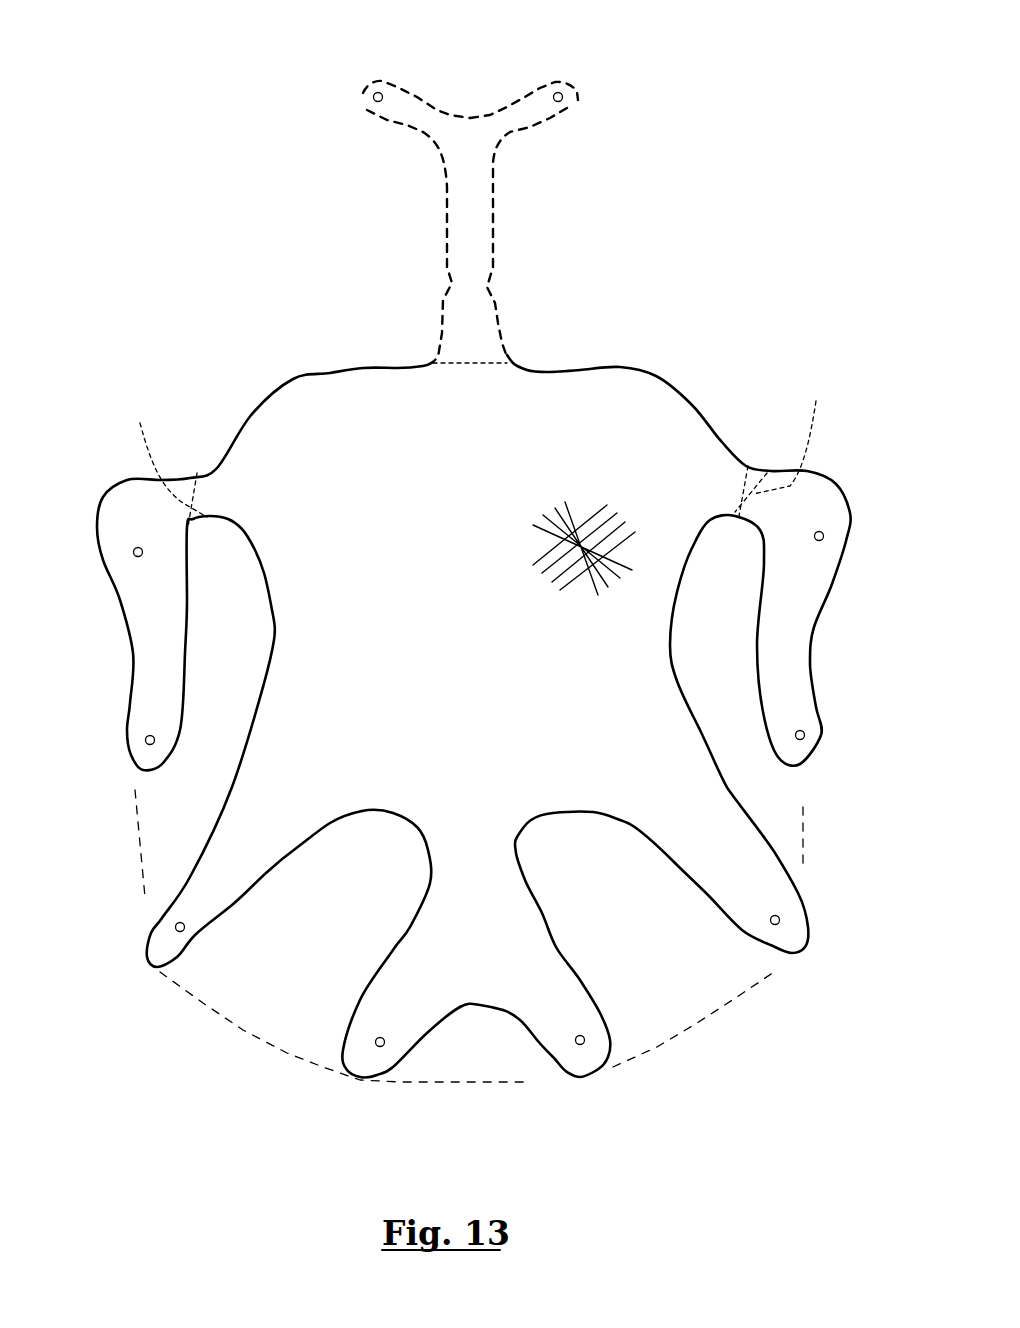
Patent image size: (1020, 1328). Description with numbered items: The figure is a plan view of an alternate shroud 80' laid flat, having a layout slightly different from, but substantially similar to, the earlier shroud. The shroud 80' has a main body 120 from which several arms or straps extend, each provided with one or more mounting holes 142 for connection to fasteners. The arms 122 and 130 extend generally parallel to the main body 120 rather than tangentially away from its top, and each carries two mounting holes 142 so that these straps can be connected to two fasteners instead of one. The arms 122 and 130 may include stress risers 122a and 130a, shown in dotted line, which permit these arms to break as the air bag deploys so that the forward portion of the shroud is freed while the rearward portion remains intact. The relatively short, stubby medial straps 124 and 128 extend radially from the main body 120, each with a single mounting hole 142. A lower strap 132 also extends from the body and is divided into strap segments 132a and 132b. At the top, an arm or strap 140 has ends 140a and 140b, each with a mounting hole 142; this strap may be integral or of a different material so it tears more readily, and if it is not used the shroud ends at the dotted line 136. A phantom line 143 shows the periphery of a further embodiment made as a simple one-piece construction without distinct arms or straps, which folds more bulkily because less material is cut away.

The shroud 80' is at (156, 270).
The main body 120 is at (634, 411).
The arm 122 is at (150, 700).
The stress riser 122a is at (141, 467).
The medial strap 124 is at (193, 885).
The medial strap 128 is at (757, 898).
The arm 130 is at (792, 685).
The stress riser 130a is at (795, 445).
The lower strap 132 is at (323, 404).
The strap segment 132a is at (410, 1017).
The strap segment 132b is at (560, 1018).
The dotted line 136 is at (483, 363).
The arm 140 is at (483, 213).
The end 140a is at (421, 118).
The end 140b is at (522, 102).
The mounting hole 142 is at (364, 108).
The phantom line 143 is at (140, 850).